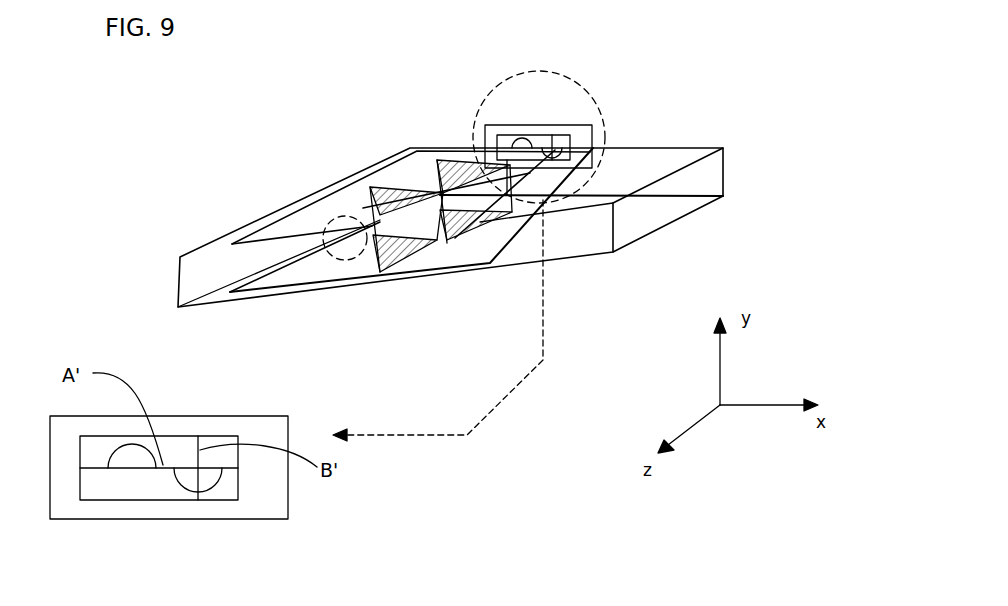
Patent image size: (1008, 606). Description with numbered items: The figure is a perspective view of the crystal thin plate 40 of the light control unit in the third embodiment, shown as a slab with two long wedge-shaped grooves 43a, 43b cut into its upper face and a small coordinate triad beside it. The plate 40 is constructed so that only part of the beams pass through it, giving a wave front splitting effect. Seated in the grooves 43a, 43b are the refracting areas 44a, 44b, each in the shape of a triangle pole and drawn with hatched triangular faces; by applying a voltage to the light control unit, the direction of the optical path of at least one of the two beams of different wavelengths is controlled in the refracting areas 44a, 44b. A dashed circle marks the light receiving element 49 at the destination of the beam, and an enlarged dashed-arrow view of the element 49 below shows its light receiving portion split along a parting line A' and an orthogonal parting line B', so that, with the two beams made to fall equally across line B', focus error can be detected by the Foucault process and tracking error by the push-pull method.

The crystal thin plate 40 is at (190, 273).
The groove 43a is at (295, 225).
The groove 43b is at (290, 272).
The refracting area 44a is at (397, 265).
The refracting area 44b is at (458, 232).
The light receiving element 49 is at (547, 124).